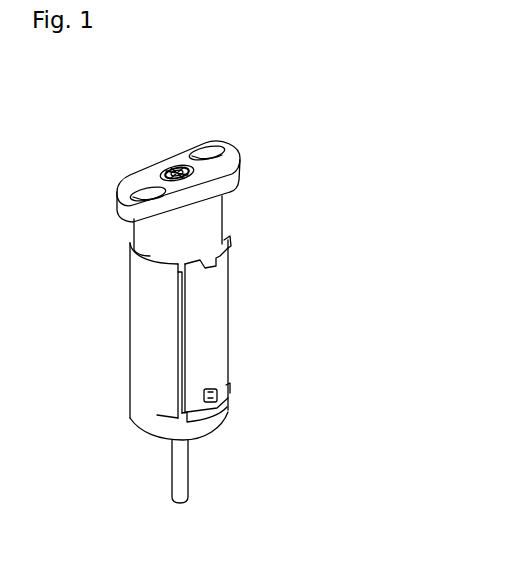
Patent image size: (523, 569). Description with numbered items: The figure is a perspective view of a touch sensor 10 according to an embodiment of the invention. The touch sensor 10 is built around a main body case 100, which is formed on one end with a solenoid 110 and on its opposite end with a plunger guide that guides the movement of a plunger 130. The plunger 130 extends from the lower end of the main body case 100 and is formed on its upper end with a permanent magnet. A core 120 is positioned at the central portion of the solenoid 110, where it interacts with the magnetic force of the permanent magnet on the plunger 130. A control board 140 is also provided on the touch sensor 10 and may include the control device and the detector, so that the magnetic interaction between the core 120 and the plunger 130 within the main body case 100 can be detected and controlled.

The touch sensor 10 is at (294, 162).
The main body case 100 is at (143, 317).
The solenoid 110 is at (213, 227).
The core 120 is at (172, 167).
The plunger 130 is at (180, 470).
The control board 140 is at (222, 325).